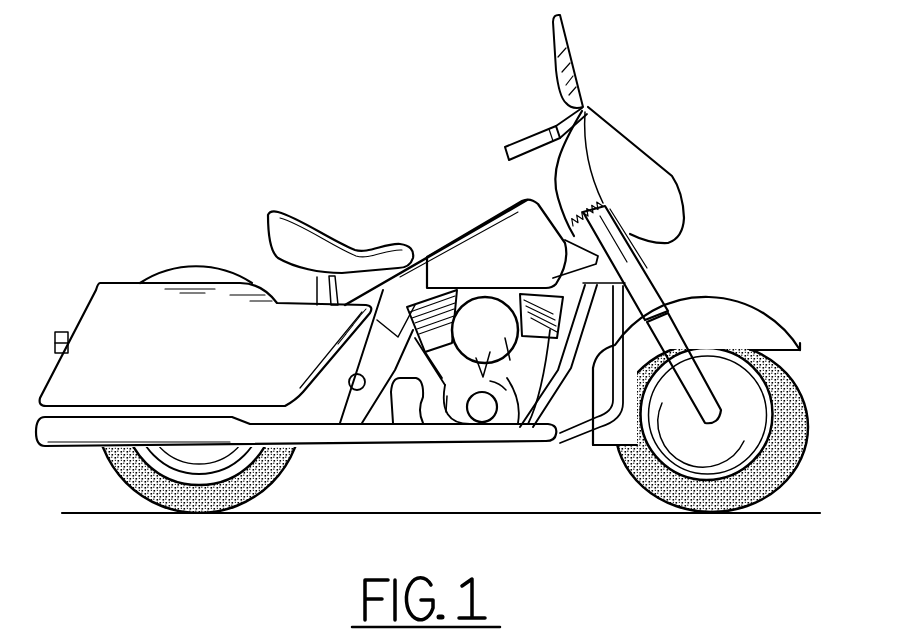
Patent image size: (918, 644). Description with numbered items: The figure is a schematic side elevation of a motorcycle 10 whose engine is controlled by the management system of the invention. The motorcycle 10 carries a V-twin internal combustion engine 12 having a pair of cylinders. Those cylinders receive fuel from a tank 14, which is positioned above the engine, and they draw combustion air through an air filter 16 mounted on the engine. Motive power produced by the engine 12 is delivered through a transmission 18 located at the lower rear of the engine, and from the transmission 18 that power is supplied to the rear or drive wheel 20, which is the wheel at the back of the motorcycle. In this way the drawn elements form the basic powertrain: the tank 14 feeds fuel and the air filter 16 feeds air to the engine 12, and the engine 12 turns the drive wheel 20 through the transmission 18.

The motorcycle 10 is at (793, 87).
The V-twin internal combustion engine 12 is at (424, 295).
The tank 14 is at (477, 228).
The air filter 16 is at (476, 347).
The transmission 18 is at (402, 417).
The rear or drive wheel 20 is at (163, 473).